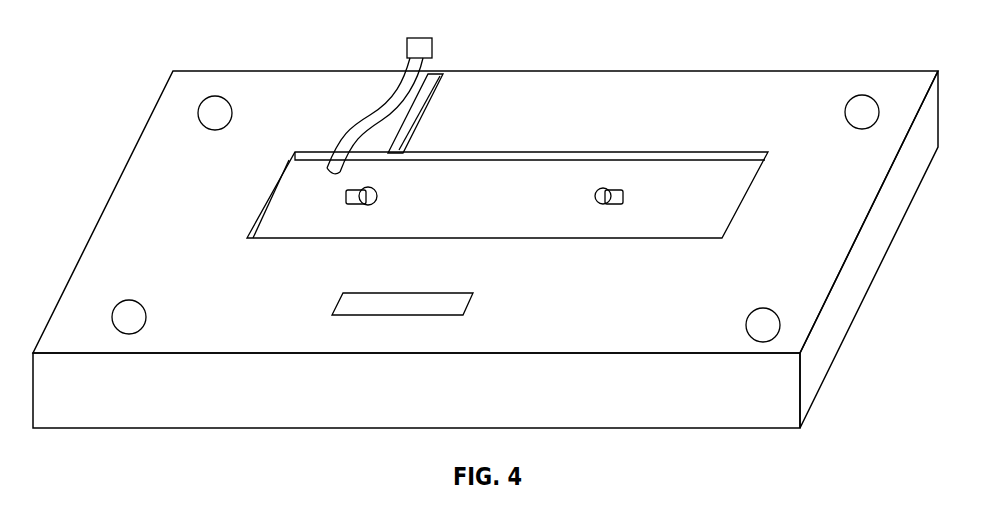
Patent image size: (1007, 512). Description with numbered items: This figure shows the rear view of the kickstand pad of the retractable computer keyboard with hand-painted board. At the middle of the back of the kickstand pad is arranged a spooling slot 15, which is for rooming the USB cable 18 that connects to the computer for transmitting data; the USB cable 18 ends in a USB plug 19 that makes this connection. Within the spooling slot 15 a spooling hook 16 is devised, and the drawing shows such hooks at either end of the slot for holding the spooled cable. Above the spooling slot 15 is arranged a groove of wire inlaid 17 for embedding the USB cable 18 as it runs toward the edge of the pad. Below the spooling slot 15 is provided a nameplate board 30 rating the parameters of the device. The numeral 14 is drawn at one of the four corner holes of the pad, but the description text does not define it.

The mounting hole 14 is at (213, 115).
The spooling slot 15 is at (507, 175).
The spooling hook 16 is at (622, 188).
The groove of wire inlaid 17 is at (443, 76).
The USB cable 18 is at (367, 118).
The USB plug 19 is at (420, 48).
The nameplate board 30 is at (398, 308).